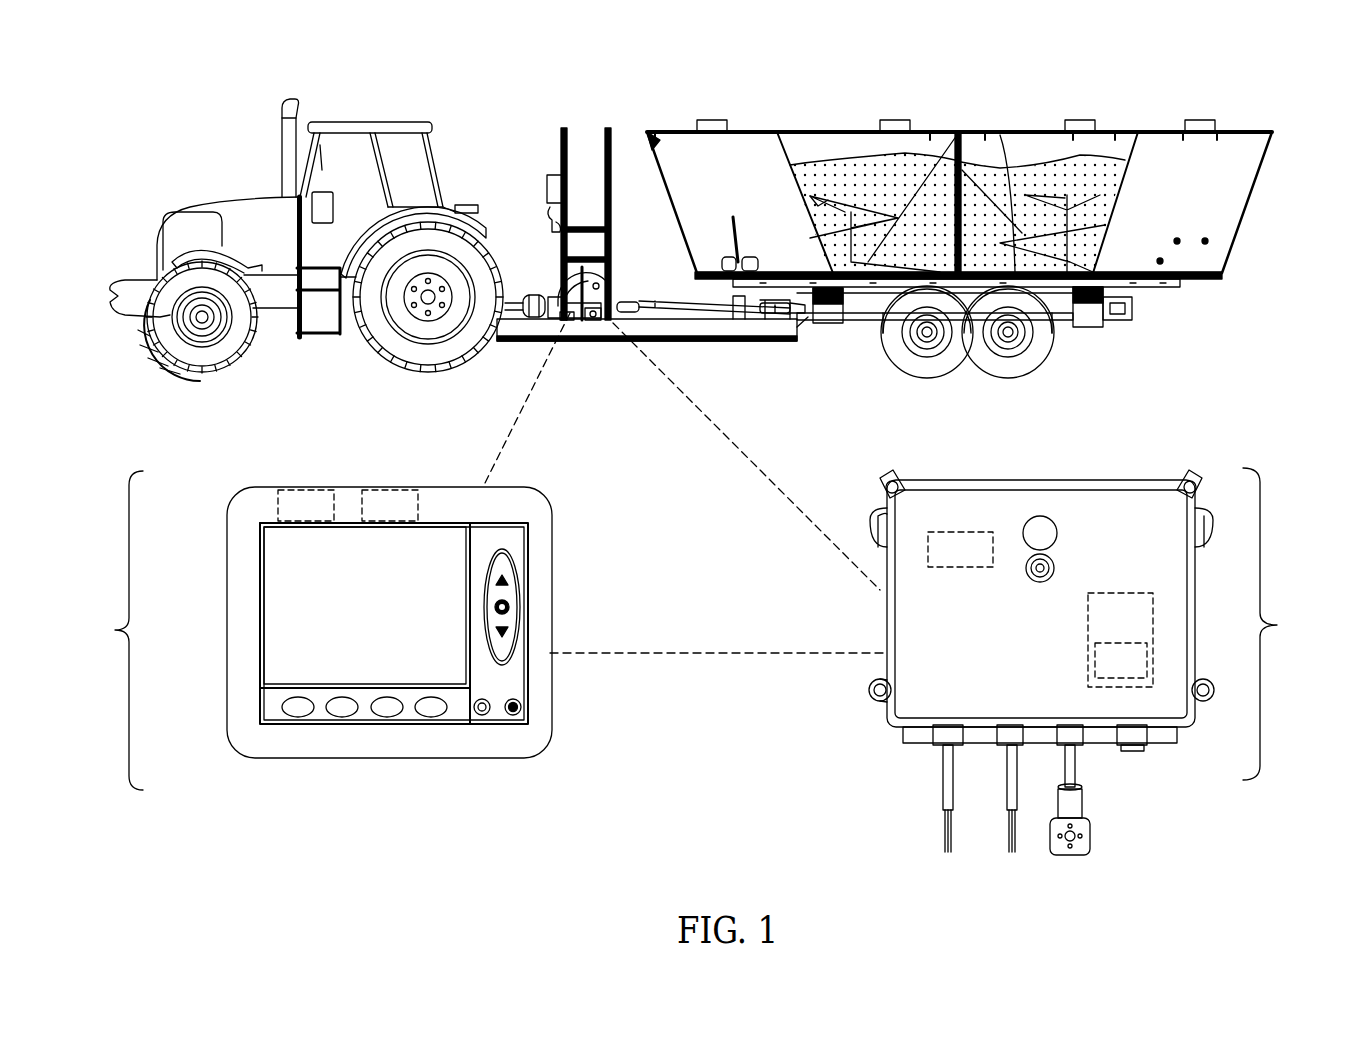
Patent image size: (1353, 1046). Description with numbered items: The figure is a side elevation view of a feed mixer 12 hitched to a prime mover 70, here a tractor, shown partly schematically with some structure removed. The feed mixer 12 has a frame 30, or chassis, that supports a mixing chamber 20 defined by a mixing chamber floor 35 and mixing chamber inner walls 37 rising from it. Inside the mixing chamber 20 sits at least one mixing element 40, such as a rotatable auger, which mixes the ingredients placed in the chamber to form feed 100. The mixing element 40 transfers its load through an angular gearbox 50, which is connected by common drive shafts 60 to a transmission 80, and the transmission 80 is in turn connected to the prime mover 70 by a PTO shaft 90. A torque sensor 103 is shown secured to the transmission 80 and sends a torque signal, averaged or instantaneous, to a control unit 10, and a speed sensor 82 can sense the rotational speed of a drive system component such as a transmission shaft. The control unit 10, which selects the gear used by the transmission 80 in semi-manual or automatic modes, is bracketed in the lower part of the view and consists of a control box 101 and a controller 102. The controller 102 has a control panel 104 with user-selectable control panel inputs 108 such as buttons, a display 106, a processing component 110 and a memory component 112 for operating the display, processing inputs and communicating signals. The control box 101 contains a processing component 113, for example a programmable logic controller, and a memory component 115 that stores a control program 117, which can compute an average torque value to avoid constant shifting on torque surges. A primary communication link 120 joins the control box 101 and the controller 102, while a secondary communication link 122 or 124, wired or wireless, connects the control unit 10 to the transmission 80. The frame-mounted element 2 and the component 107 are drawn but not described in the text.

The frame 2 is at (1170, 290).
The control unit 10 is at (681, 629).
The feed mixer 12 is at (1257, 184).
The mixing chamber 20 is at (1115, 150).
The frame 30 is at (739, 340).
The mixing chamber floor 35 is at (957, 185).
The mixing chamber inner walls 37 is at (668, 178).
The mixing element 40 is at (810, 197).
The angular gearbox 50 is at (826, 327).
The drive shafts 60 is at (648, 301).
The prime mover 70 is at (364, 120).
The transmission 80 is at (568, 283).
The speed sensor 82 is at (566, 320).
The PTO shaft 90 is at (514, 318).
The feed 100 is at (1017, 177).
The control box 101 is at (546, 192).
The controller 102 is at (316, 205).
The torque sensor 103 is at (584, 320).
The control panel 104 is at (287, 636).
The display 106 is at (382, 618).
The sensor 107 is at (1101, 315).
The control panel inputs 108 is at (386, 718).
The processing component 110 is at (322, 518).
The memory component 112 is at (405, 518).
The processing component 113 is at (976, 567).
The memory component 115 is at (1137, 638).
The control program 117 is at (1137, 681).
The primary communication link 120 is at (722, 656).
The secondary communication link 122 is at (738, 478).
The secondary communication link 124 is at (523, 420).